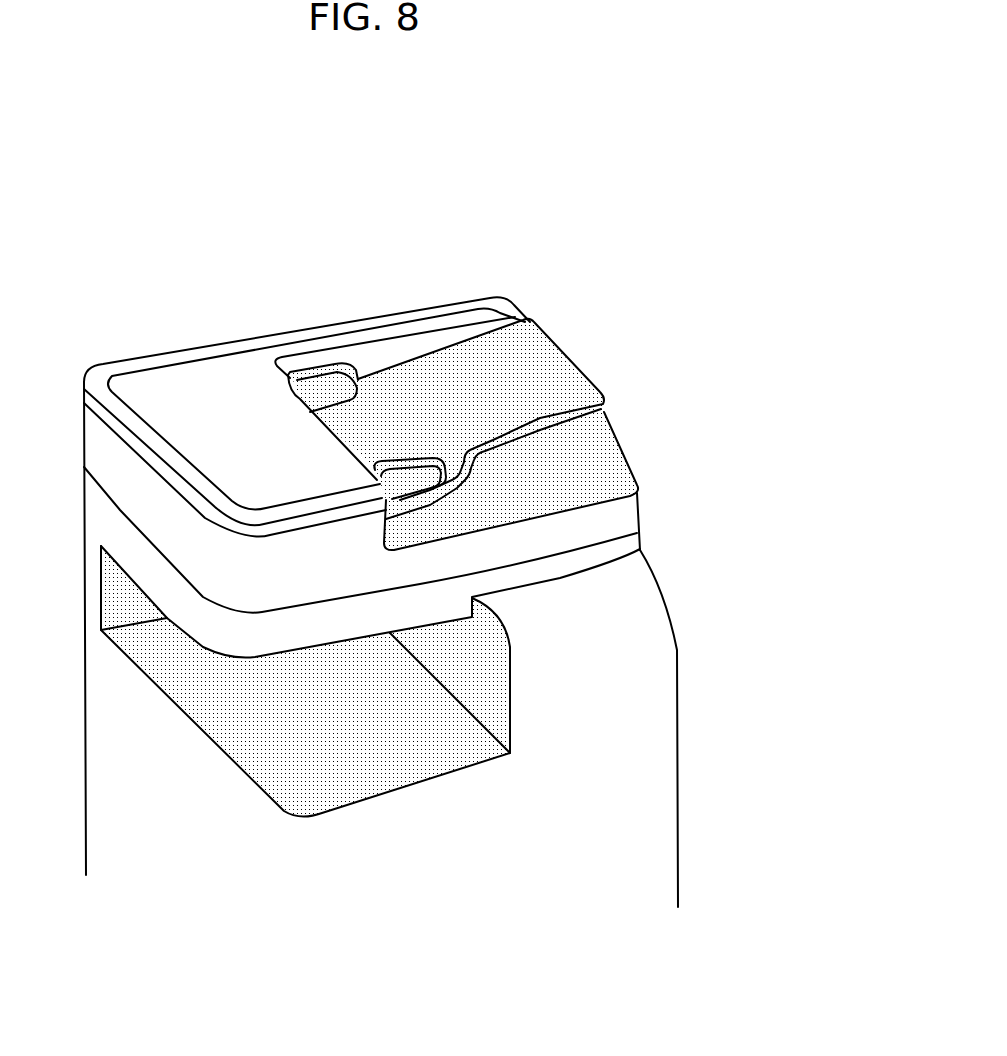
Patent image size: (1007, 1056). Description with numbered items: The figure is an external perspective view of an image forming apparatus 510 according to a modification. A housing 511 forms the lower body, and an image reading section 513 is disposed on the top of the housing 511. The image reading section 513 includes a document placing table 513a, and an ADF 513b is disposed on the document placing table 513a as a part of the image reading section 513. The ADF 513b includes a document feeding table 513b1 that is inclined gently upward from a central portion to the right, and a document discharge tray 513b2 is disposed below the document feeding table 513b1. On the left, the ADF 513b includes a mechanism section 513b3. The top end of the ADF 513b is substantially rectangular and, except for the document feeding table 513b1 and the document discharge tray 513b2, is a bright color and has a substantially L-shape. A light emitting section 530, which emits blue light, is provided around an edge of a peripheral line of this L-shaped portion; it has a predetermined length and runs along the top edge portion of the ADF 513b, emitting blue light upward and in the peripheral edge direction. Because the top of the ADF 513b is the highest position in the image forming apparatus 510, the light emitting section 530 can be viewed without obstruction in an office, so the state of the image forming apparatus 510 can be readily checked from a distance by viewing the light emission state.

The image forming apparatus 510 is at (335, 212).
The housing 511 is at (602, 743).
The image reading section 513 is at (593, 275).
The document placing table 513a is at (538, 552).
The ADF 513b is at (415, 297).
The document feeding table 513b1 is at (529, 342).
The document discharge tray 513b2 is at (587, 473).
The mechanism section 513b3 is at (207, 410).
The light emitting section 530 is at (100, 382).